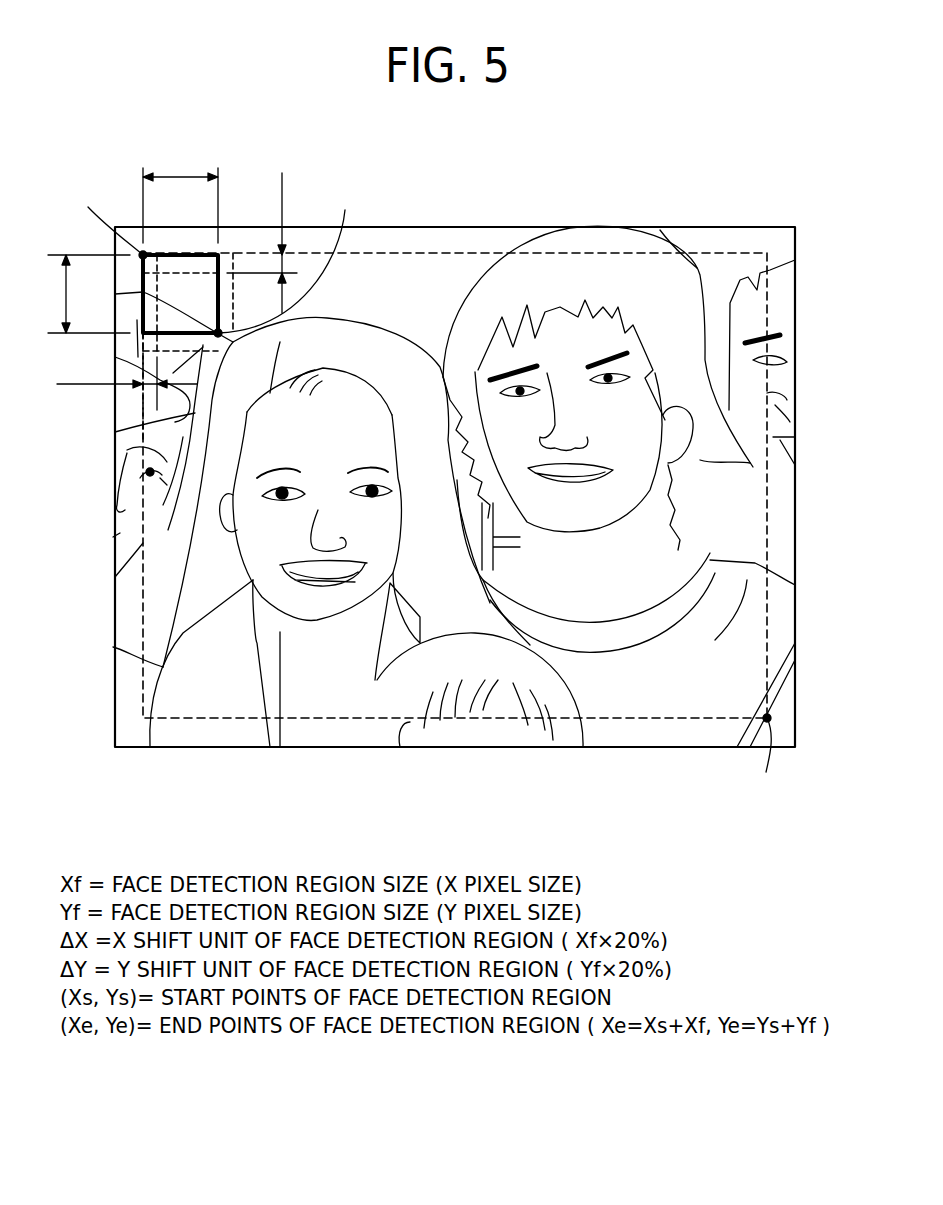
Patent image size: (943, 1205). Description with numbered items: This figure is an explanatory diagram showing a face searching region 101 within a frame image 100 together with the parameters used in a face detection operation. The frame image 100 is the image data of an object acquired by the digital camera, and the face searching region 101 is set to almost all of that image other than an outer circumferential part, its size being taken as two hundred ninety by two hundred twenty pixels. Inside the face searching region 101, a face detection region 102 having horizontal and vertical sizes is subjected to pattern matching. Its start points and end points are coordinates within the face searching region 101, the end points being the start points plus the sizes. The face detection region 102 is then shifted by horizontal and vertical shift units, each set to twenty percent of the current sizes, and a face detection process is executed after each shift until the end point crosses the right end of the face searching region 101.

The frame image 100 is at (564, 181).
The face searching region 101 is at (230, 718).
The face detection region 102 is at (115, 432).